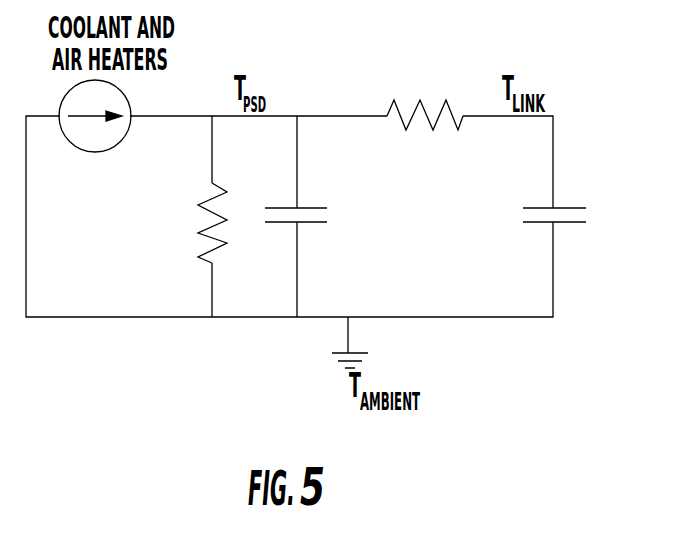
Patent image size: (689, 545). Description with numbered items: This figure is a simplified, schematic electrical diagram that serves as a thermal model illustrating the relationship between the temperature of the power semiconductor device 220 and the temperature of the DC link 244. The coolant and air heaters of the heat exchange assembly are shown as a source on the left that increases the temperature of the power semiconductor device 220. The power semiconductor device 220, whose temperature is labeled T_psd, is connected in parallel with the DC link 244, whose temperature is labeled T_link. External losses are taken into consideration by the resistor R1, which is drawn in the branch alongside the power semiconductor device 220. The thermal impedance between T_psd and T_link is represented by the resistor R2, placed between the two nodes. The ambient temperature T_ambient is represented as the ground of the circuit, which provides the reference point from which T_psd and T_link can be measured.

The power semiconductor device 220 is at (321, 215).
The DC link 244 is at (575, 215).
The resistor R1 is at (196, 223).
The resistor R2 is at (425, 90).